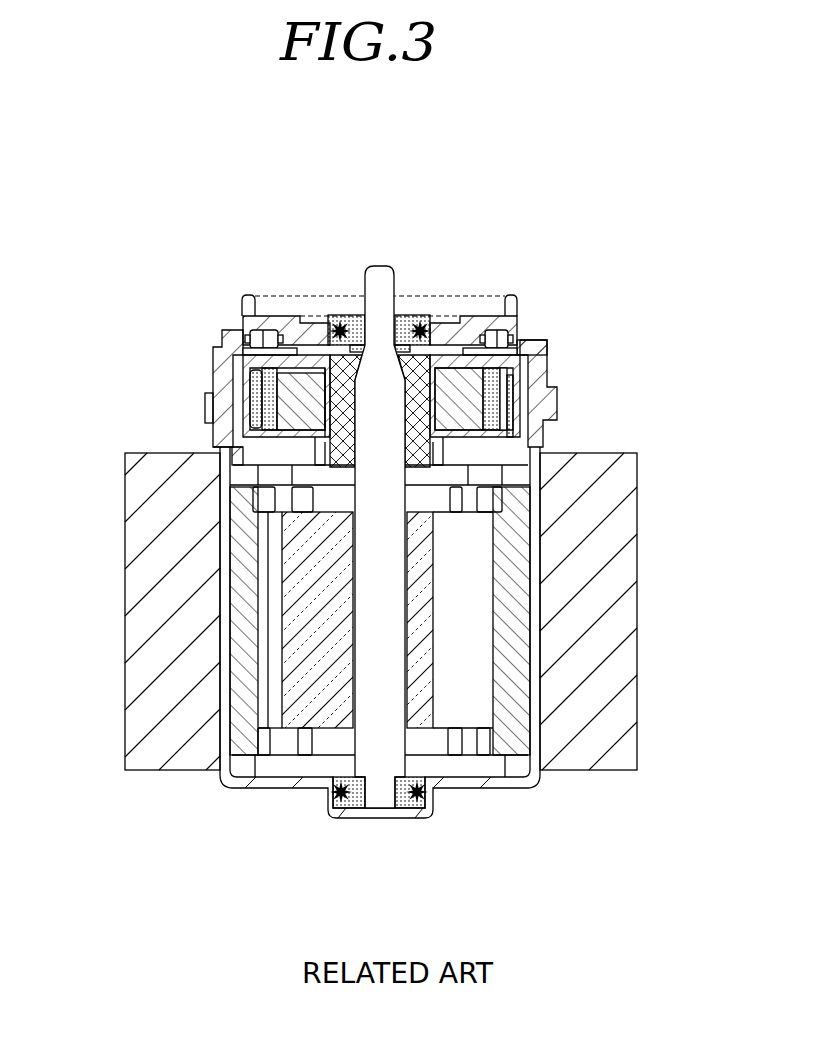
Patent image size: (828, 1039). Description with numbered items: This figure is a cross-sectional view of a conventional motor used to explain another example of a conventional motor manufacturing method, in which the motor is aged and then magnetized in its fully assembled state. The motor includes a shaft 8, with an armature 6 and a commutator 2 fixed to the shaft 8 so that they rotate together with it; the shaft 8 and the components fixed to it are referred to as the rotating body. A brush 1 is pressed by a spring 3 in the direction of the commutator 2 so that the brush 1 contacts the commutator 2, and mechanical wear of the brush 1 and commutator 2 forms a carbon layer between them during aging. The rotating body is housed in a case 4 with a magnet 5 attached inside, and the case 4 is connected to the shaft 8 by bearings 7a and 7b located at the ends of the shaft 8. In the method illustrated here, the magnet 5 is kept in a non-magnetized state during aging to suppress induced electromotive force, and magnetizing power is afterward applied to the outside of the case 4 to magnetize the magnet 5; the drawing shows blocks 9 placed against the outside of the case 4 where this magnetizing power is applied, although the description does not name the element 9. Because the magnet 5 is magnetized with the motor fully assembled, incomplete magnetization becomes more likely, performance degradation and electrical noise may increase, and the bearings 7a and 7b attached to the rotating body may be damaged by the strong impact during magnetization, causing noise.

The brush 1 is at (283, 388).
The commutator 2 is at (345, 414).
The spring 3 is at (492, 400).
The case 4 is at (228, 592).
The magnet 5 is at (234, 543).
The armature 6 is at (320, 648).
The bearing 7a is at (415, 802).
The bearing 7b is at (408, 328).
The shaft 8 is at (384, 588).
The yoke block 9 is at (170, 493).